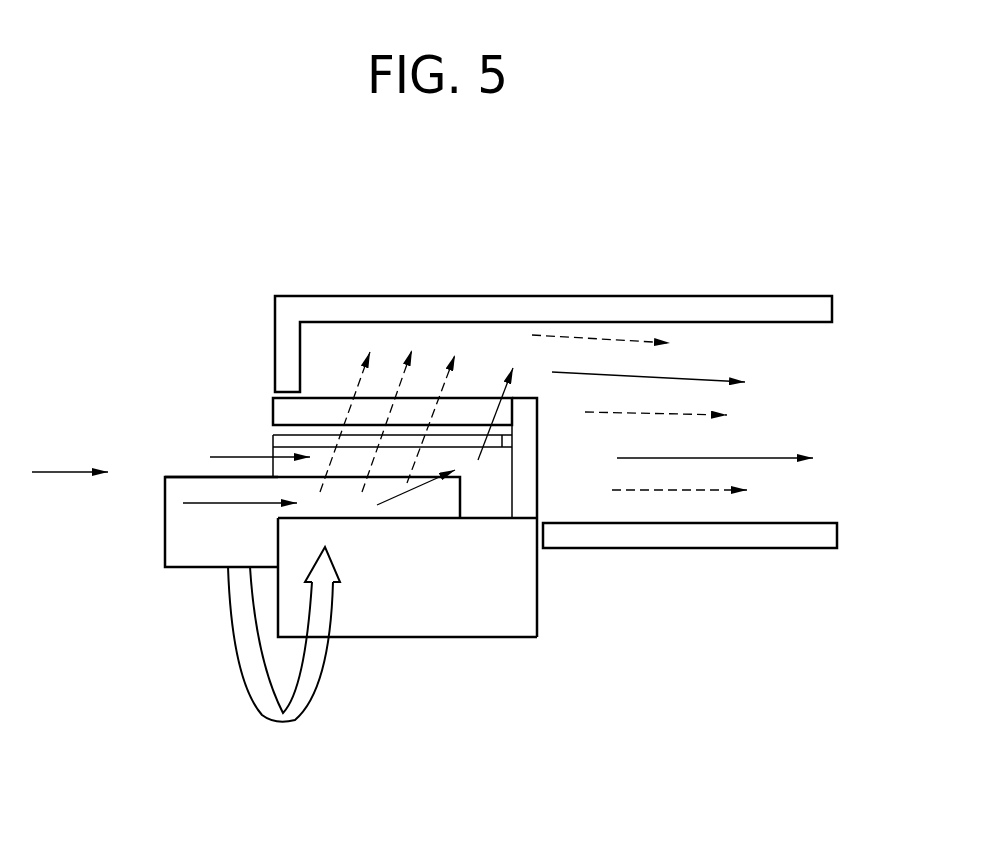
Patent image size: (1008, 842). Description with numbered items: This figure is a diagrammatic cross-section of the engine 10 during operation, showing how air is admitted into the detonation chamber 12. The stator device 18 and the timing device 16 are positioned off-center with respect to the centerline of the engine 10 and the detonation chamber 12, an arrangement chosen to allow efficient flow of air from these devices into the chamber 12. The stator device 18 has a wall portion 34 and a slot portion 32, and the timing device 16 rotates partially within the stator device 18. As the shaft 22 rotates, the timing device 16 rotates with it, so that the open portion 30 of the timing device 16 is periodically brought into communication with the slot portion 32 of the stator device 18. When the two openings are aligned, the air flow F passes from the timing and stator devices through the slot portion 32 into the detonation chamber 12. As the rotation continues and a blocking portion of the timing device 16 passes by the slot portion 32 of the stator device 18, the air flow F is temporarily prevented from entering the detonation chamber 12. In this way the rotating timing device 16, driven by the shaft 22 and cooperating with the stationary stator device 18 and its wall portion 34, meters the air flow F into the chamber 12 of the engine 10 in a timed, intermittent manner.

The engine 10 is at (648, 255).
The detonation chamber 12 is at (782, 408).
The wall portion 34 is at (273, 415).
The timing device 16 is at (273, 443).
The open portion of timing device 30 is at (287, 468).
The slot portion 32 is at (487, 493).
The shaft 22 is at (200, 572).
The stator device 18 is at (428, 638).
The air flow F is at (62, 470).